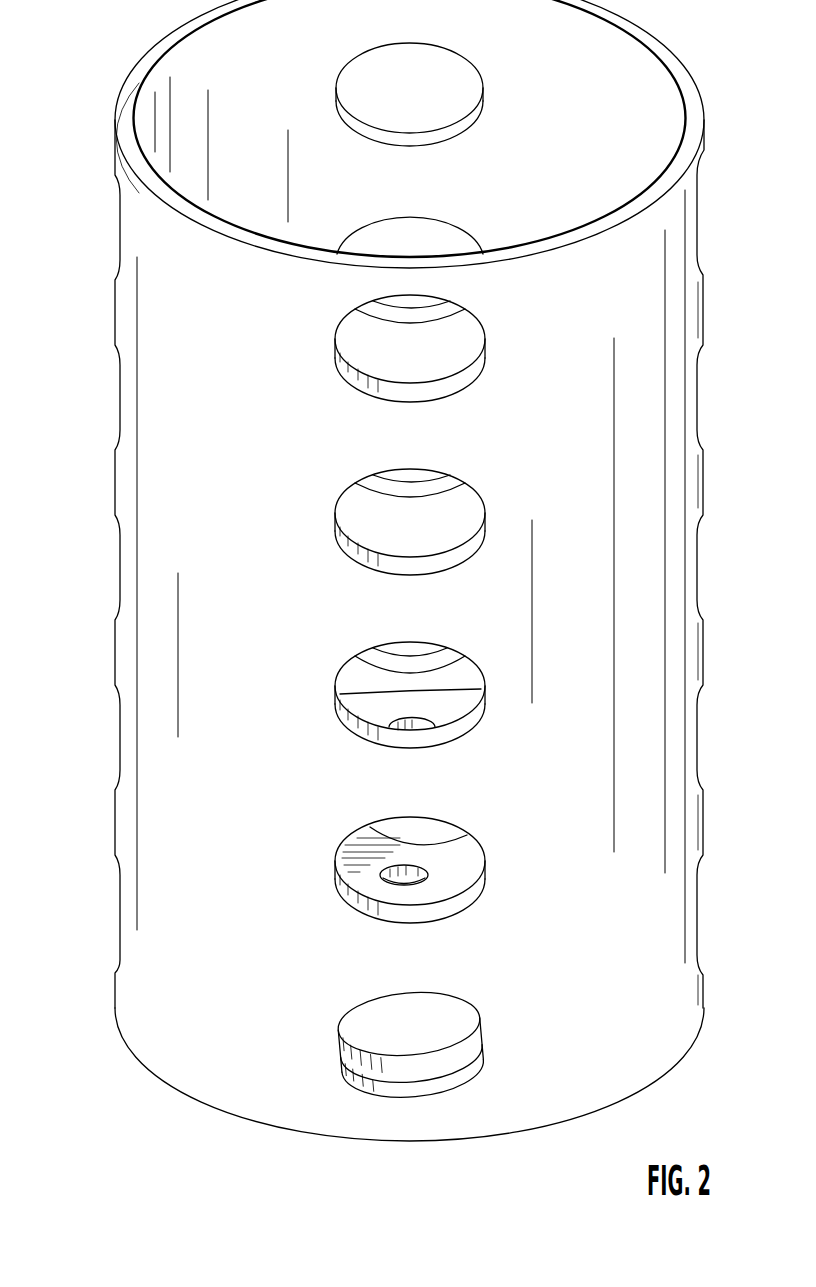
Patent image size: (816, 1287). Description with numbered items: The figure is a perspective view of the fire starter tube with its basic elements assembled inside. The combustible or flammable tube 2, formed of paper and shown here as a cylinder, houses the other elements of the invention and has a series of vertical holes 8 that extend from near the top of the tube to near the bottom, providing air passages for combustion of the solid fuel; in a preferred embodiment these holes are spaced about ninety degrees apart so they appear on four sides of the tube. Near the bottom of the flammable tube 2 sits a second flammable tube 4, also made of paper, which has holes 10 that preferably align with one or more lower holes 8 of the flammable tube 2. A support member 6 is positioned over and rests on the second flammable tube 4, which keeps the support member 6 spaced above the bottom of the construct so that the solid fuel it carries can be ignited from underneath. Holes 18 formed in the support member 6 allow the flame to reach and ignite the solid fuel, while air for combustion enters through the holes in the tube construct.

The flammable tube 2 is at (155, 315).
The second flammable tube 4 is at (462, 1050).
The support member 6 is at (363, 708).
The vertical holes 8 is at (425, 238).
The holes 10 is at (397, 1022).
The holes 18 is at (407, 882).